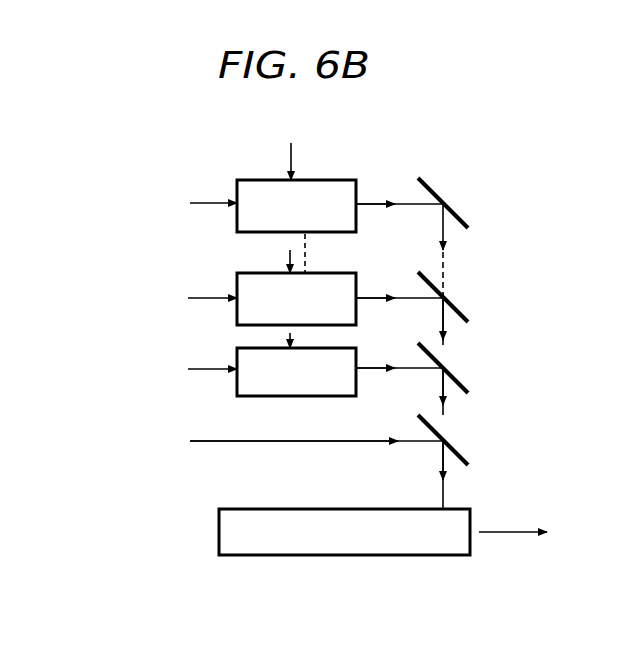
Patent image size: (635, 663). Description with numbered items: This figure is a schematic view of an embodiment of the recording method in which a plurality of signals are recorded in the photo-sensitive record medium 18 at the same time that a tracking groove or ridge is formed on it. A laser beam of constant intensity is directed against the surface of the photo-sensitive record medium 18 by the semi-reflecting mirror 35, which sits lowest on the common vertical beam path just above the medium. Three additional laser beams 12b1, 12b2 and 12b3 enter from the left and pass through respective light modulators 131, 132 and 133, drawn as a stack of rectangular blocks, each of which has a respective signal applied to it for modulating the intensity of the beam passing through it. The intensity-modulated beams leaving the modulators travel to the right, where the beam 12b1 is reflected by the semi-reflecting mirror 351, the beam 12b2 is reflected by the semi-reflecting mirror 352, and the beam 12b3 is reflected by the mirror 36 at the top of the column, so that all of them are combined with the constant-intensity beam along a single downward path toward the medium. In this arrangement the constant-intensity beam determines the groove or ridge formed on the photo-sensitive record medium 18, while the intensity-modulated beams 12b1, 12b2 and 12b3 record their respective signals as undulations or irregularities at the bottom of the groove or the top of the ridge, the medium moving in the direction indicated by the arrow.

The light modulator 133 is at (245, 180).
The light modulator 132 is at (240, 280).
The light modulator 131 is at (258, 396).
The laser beam 12b3 is at (210, 203).
The laser beam 12b2 is at (207, 298).
The laser beam 12b1 is at (206, 369).
The mirror 36 is at (455, 212).
The semi-reflecting mirror 352 is at (457, 306).
The semi-reflecting mirror 351 is at (458, 379).
The semi-reflecting mirror 35 is at (457, 451).
The photo-sensitive record medium 18 is at (229, 557).